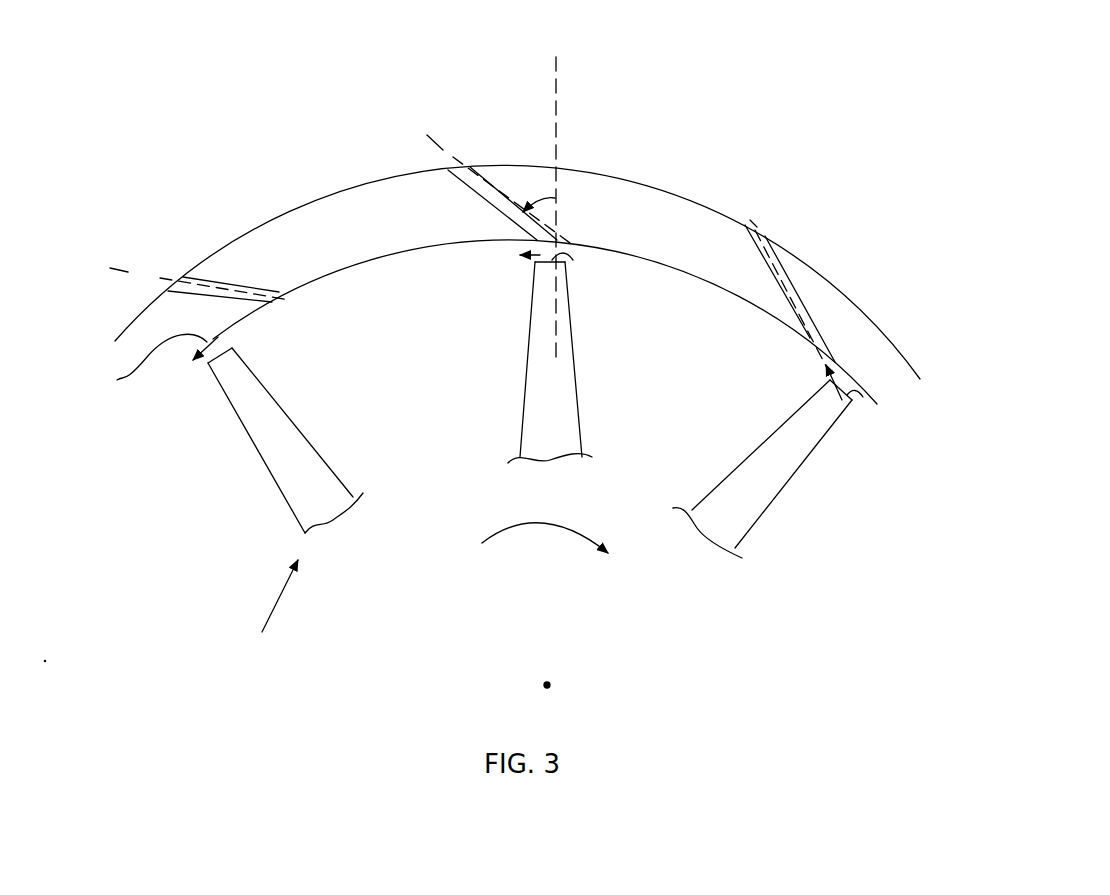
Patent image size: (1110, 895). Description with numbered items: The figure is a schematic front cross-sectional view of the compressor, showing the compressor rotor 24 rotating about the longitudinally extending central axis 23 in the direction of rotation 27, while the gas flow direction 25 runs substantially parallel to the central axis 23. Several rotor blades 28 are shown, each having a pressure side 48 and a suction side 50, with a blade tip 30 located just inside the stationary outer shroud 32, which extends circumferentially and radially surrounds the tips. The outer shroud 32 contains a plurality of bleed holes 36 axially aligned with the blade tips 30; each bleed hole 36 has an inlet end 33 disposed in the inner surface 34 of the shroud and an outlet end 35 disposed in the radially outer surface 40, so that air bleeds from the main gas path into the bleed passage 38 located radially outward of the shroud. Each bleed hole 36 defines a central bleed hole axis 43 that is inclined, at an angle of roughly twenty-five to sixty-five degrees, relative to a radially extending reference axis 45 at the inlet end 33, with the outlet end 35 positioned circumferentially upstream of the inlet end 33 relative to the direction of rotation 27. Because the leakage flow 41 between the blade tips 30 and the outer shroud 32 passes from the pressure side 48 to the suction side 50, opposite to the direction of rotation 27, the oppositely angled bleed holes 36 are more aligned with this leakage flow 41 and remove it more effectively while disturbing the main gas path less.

The central axis 23 is at (608, 666).
The gas flow direction 25 is at (547, 685).
The compressor rotor 24 is at (273, 617).
The direction of rotation 27 is at (500, 537).
The rotor blade 28 is at (518, 437).
The blade tip 30 is at (230, 333).
The outer shroud 32 is at (517, 251).
The inlet end 33 is at (278, 299).
The inner surface 34 is at (672, 268).
The outlet end 35 is at (173, 277).
The bleed hole 36 is at (215, 277).
The bleed passage 38 is at (582, 156).
The outer surface 40 is at (310, 200).
The leakage flow 41 is at (918, 392).
The bleed hole axis 43 is at (116, 268).
The reference axis 45 is at (557, 77).
The pressure side 48 is at (282, 400).
The suction side 50 is at (235, 413).